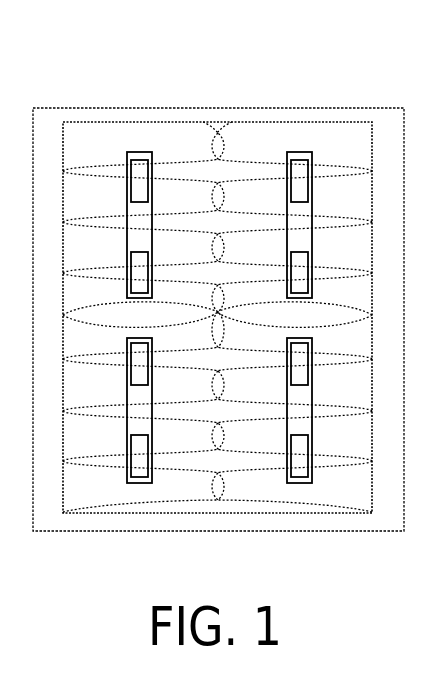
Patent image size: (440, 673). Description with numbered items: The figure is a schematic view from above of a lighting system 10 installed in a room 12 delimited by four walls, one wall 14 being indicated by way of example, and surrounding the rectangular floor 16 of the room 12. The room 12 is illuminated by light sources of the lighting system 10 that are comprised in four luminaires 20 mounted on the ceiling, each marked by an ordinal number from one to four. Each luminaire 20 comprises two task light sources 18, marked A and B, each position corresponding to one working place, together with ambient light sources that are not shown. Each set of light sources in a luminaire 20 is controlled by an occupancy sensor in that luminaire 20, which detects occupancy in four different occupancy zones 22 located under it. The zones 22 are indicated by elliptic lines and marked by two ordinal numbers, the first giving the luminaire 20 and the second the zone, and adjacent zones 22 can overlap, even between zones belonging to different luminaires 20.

The lighting system 10 is at (365, 76).
The room 12 is at (222, 108).
The wall 14 is at (303, 122).
The floor 16 is at (218, 463).
The task light source 18 is at (140, 152).
The luminaire 20 is at (140, 483).
The occupancy zone 22 is at (80, 497).